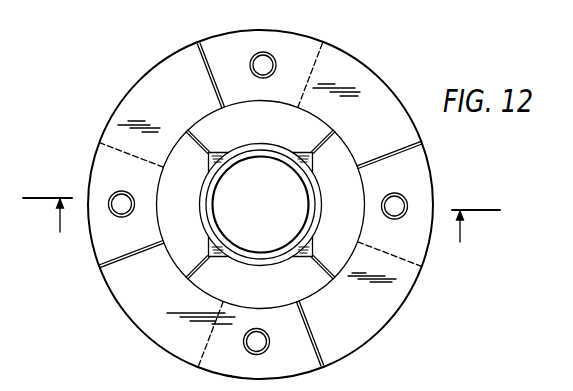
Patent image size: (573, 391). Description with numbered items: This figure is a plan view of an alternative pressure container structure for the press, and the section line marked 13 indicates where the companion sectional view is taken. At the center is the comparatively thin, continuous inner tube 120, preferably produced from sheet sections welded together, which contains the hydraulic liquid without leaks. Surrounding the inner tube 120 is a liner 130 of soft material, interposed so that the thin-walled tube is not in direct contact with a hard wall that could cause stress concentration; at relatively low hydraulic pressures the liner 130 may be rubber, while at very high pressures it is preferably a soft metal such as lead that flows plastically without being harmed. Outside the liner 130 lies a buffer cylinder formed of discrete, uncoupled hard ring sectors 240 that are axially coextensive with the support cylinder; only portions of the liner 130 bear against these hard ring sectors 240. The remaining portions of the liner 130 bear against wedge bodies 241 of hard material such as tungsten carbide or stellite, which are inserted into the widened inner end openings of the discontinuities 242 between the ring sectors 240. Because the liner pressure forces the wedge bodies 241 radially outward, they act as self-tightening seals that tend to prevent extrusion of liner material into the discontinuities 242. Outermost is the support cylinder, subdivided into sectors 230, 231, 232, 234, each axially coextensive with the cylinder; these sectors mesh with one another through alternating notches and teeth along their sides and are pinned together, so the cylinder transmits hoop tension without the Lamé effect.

The inner tube 120 is at (235, 245).
The liner 130 is at (280, 258).
The sector 230 is at (124, 103).
The sector 231 is at (123, 311).
The sector 232 is at (394, 313).
The sector 234 is at (377, 79).
The hard ring sector 240 is at (274, 133).
The wedge body 241 is at (209, 160).
The discontinuity 242 is at (187, 128).
The section line 13- 13 is at (261, 220).